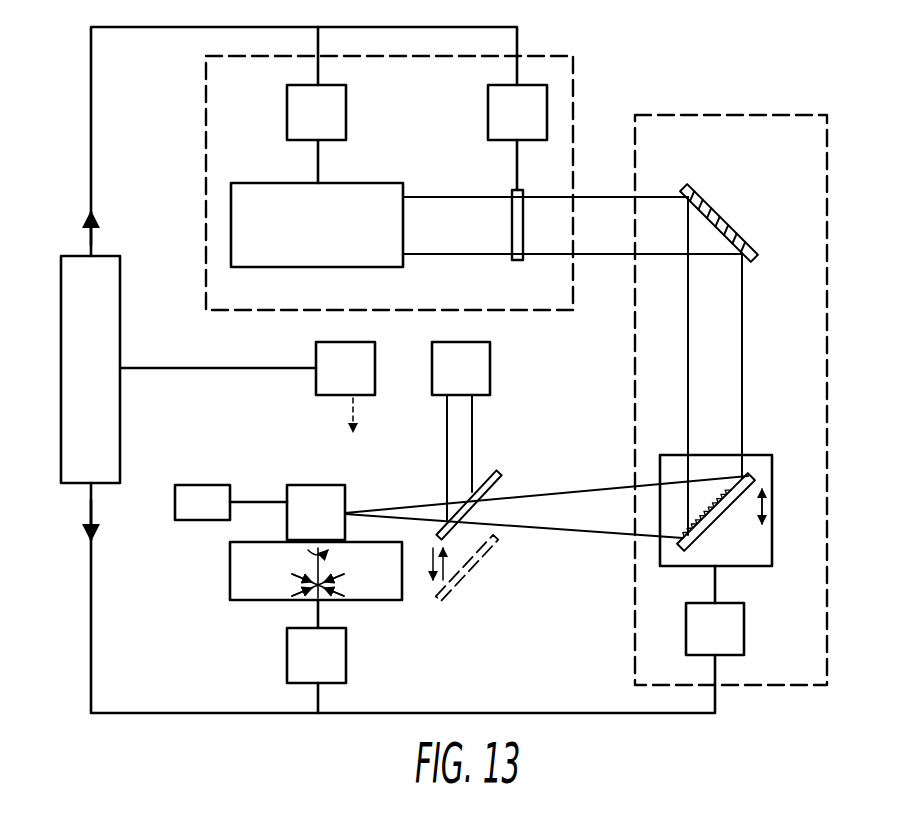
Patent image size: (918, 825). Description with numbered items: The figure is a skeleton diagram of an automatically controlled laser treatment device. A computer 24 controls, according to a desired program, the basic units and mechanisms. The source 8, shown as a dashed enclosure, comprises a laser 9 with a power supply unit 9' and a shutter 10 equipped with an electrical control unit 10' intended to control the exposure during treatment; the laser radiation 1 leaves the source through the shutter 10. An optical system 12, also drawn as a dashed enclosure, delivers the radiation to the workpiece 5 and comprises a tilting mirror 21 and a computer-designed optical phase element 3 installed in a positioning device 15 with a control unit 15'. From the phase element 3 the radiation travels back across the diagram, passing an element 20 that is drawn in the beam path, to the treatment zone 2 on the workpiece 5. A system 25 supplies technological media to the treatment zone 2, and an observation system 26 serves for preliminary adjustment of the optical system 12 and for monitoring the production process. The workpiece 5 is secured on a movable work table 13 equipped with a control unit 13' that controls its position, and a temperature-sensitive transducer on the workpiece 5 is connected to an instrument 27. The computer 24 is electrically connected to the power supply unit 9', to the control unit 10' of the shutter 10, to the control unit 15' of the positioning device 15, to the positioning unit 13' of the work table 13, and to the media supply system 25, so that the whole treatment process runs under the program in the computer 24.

The laser beam 1 is at (572, 343).
The treatment zone 2 is at (546, 501).
The computer-designed optical phase element 3 is at (698, 538).
The workpiece 5 is at (316, 512).
The source 8 is at (580, 90).
The laser 9 is at (317, 203).
The power supply unit 9' is at (316, 112).
The shutter 10 is at (540, 200).
The electrical control unit 10' is at (517, 112).
The optical system 12 is at (733, 112).
The movable work table 13 is at (316, 571).
The control unit 13' is at (316, 641).
The device 15 is at (736, 523).
The control unit 15' is at (715, 610).
The beam splitter 20 is at (488, 484).
The tilting mirror 21 is at (715, 208).
The computer 24 is at (90, 369).
The system for supplying technological media 25 is at (247, 387).
The observation system 26 is at (461, 431).
The instrument 27 is at (199, 496).